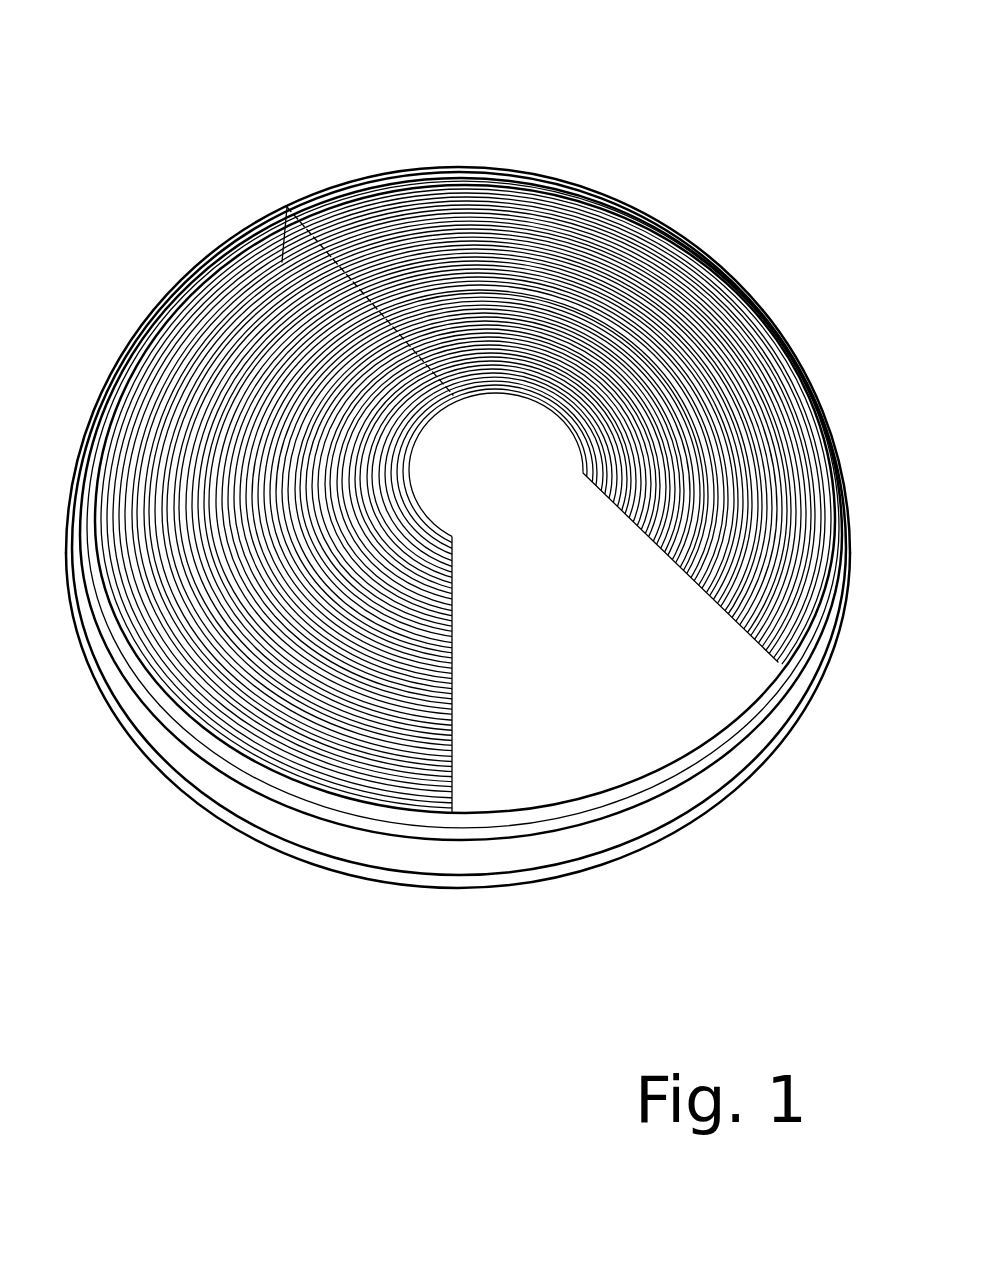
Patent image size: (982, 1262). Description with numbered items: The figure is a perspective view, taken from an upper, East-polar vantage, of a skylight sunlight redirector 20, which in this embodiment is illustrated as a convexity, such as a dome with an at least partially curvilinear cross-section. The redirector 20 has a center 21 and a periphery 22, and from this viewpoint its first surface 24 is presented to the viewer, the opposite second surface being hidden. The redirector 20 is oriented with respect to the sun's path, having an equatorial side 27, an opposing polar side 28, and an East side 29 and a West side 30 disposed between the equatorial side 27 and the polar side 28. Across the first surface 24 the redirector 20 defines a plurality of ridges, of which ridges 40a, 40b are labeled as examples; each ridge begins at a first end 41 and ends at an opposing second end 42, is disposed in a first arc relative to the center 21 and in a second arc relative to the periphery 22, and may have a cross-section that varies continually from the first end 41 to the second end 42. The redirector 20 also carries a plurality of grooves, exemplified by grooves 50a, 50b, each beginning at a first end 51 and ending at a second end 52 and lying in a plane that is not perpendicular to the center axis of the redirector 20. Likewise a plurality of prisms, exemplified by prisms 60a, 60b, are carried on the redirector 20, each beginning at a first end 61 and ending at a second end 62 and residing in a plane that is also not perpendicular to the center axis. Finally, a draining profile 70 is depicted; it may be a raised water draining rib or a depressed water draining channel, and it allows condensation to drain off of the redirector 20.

The redirector 20 is at (204, 59).
The center 21 is at (458, 416).
The periphery 22 is at (780, 747).
The first surface 24 is at (545, 582).
The equatorial side 27 is at (287, 207).
The polar side 28 is at (657, 808).
The East side 29 is at (98, 636).
The West side 30 is at (733, 268).
The ridge 40a is at (403, 743).
The ridge 40b is at (380, 727).
The first end 41 is at (448, 747).
The second end 42 is at (720, 619).
The groove 50a is at (350, 695).
The groove 50b is at (317, 667).
The first end 51 is at (448, 709).
The second end 52 is at (710, 590).
The prism 60a is at (290, 632).
The prism 60b is at (283, 566).
The first end 61 is at (452, 672).
The second end 62 is at (687, 567).
The draining profile 70 is at (412, 178).